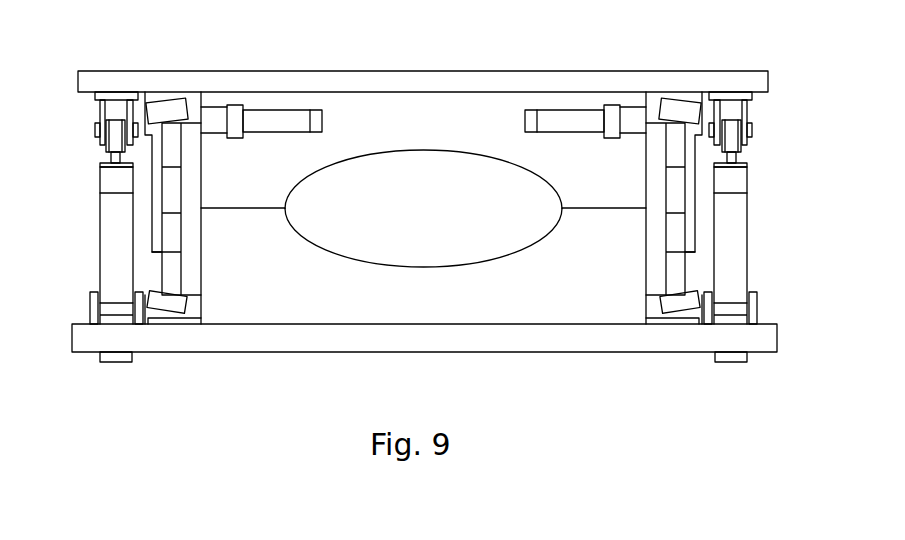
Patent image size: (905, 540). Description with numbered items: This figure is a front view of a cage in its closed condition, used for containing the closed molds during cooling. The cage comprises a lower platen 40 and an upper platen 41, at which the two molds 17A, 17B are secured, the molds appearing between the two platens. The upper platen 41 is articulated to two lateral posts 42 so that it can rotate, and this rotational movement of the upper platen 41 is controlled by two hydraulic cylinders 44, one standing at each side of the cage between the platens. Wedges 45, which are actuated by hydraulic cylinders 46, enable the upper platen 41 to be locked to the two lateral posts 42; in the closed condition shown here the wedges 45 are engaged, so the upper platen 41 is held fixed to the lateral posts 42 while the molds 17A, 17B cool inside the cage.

The mold 17A is at (397, 115).
The mold 17B is at (275, 307).
The lower platen 40 is at (585, 338).
The upper platen 41 is at (508, 82).
The lateral post 42 is at (158, 185).
The hydraulic cylinder 44 is at (107, 253).
The wedge 45 is at (167, 110).
The hydraulic cylinder 46 is at (272, 117).